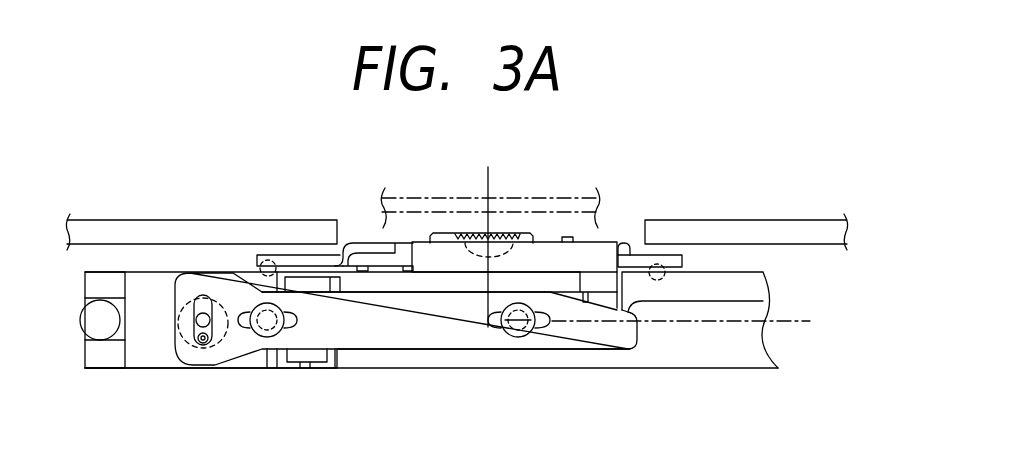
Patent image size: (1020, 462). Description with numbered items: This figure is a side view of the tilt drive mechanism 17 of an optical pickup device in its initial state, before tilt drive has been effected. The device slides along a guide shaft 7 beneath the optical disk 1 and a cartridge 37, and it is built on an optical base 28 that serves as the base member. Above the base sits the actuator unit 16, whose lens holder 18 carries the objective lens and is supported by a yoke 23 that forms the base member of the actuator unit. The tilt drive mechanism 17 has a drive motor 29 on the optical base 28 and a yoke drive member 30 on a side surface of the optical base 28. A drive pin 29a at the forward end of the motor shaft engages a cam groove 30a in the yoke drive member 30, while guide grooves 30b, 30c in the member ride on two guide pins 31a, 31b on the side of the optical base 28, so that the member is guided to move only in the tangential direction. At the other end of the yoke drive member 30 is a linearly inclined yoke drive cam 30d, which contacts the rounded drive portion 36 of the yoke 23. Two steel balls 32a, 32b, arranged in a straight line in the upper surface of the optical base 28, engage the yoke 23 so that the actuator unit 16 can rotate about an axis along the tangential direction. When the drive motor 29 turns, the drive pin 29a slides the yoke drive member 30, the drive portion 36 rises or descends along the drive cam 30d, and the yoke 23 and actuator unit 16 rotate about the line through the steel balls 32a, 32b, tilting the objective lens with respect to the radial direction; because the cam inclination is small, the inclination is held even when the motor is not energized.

The optical disk 1 is at (584, 200).
The guide shaft 7 is at (85, 320).
The actuator unit 16 is at (357, 240).
The tilt drive mechanism 17 is at (208, 366).
The lens holder 18 is at (432, 237).
The yoke 23 is at (623, 243).
The optical base 28 is at (752, 352).
The drive motor 29 is at (182, 273).
The drive pin 29a is at (195, 338).
The yoke drive member 30 is at (440, 330).
The cam groove 30a is at (208, 307).
The guide groove 30b is at (292, 330).
The guide groove 30c is at (544, 327).
The yoke drive cam 30d is at (625, 311).
The guide pin 31a is at (521, 338).
The guide pin 31b is at (267, 338).
The steel ball 32a is at (268, 260).
The steel ball 32b is at (658, 263).
The drive portion 36 is at (600, 283).
The cartridge 37 is at (820, 230).